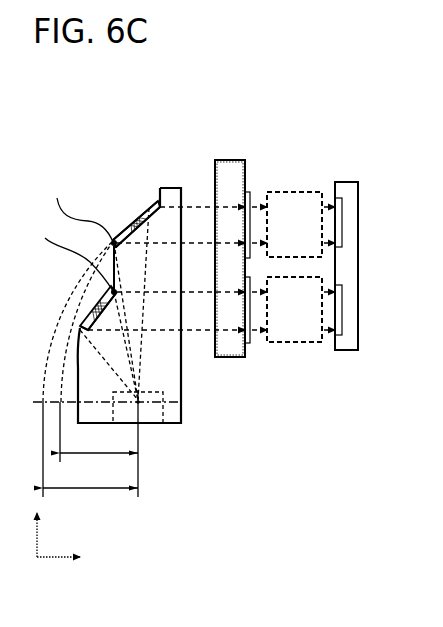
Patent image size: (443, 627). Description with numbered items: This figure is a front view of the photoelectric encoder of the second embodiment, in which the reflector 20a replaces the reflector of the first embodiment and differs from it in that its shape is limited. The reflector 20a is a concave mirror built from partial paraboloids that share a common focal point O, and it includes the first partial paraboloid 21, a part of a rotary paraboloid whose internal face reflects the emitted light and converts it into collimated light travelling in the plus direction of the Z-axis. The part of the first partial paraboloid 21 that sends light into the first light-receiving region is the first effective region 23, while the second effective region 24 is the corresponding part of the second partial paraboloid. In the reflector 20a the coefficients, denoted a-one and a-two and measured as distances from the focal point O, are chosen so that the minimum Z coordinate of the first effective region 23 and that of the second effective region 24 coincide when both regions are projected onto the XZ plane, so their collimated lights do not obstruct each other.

The reflector 20a is at (191, 438).
The first partial paraboloid 21 is at (157, 200).
The first effective region 23 is at (142, 210).
The second effective region 24 is at (99, 304).